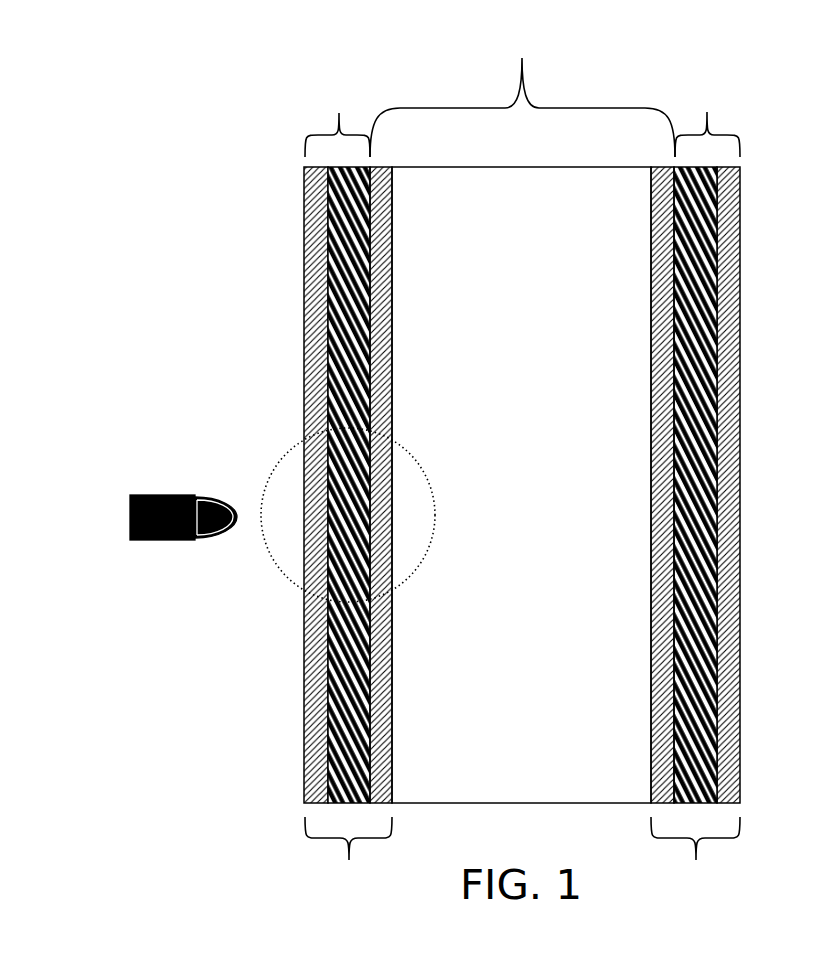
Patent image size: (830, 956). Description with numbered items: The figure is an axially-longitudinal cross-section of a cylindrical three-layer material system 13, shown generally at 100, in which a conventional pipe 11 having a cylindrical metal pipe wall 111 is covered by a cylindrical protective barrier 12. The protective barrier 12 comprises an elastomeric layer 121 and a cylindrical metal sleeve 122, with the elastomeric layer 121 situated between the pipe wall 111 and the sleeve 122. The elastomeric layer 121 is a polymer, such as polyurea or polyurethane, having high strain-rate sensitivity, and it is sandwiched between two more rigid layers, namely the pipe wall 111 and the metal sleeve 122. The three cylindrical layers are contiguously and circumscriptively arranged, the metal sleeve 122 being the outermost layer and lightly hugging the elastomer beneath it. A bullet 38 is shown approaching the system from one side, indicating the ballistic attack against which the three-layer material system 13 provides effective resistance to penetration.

The armor system 100 is at (267, 262).
The pipe 11 is at (522, 415).
The pipe wall 111 is at (663, 477).
The protective barrier 12 is at (522, 119).
The elastomeric layer 121 is at (697, 302).
The metal sleeve 122 is at (731, 212).
The three-layer material system 13 is at (522, 858).
The bullet 38 is at (175, 488).